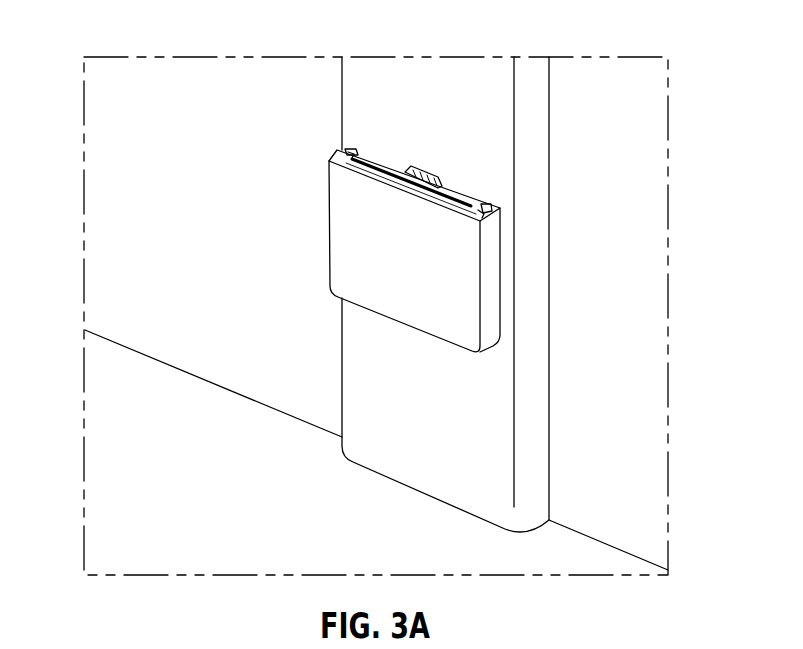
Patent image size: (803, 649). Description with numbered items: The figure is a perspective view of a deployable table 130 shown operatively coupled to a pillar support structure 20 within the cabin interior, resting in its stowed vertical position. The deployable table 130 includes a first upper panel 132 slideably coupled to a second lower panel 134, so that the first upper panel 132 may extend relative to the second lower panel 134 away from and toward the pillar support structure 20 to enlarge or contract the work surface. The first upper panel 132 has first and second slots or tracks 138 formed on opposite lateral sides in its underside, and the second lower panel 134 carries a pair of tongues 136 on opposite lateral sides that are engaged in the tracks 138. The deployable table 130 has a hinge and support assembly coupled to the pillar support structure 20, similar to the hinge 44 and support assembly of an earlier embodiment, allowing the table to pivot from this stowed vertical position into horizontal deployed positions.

The pillar support structure 20 is at (537, 132).
The hinge 44 is at (437, 178).
The deployable table 130 is at (385, 188).
The first upper panel 132 is at (405, 207).
The second lower panel 134 is at (382, 163).
The tongues 136 is at (345, 150).
The slots or tracks 138 is at (353, 152).